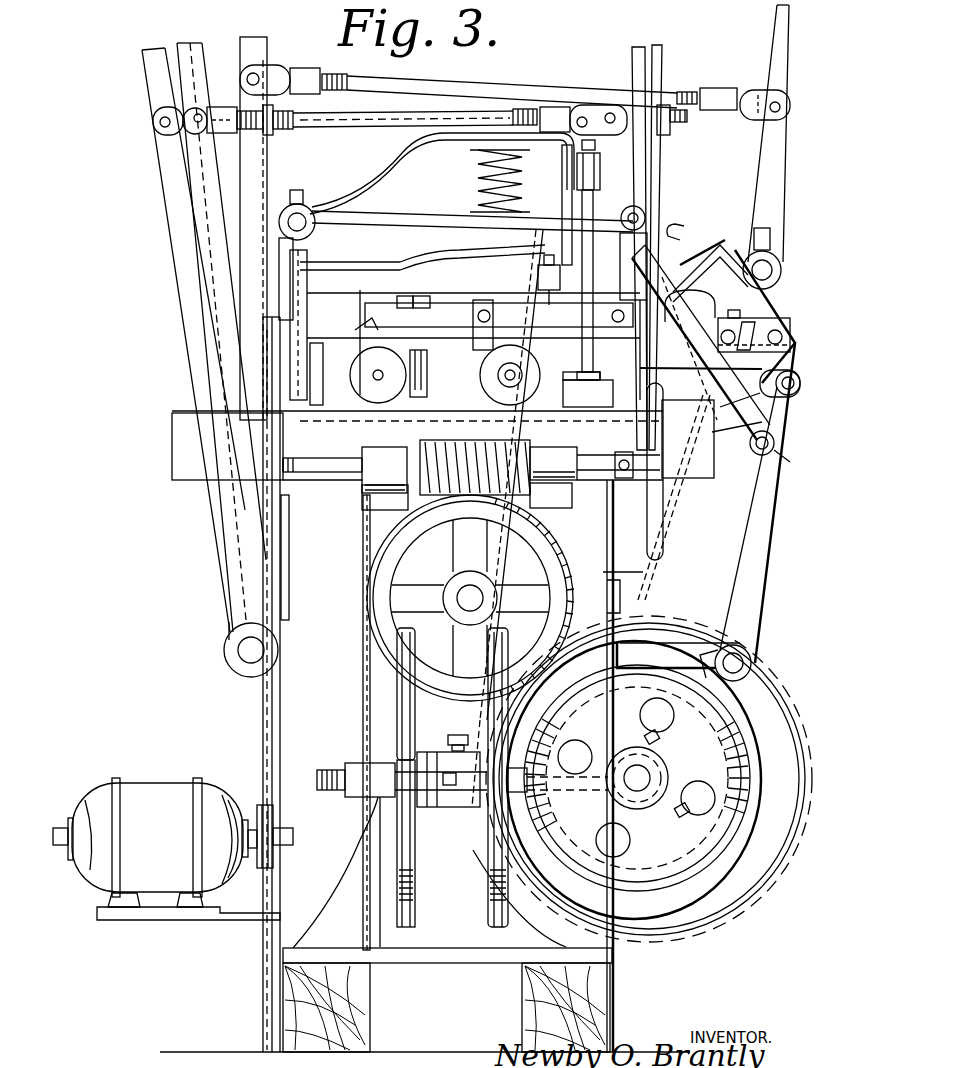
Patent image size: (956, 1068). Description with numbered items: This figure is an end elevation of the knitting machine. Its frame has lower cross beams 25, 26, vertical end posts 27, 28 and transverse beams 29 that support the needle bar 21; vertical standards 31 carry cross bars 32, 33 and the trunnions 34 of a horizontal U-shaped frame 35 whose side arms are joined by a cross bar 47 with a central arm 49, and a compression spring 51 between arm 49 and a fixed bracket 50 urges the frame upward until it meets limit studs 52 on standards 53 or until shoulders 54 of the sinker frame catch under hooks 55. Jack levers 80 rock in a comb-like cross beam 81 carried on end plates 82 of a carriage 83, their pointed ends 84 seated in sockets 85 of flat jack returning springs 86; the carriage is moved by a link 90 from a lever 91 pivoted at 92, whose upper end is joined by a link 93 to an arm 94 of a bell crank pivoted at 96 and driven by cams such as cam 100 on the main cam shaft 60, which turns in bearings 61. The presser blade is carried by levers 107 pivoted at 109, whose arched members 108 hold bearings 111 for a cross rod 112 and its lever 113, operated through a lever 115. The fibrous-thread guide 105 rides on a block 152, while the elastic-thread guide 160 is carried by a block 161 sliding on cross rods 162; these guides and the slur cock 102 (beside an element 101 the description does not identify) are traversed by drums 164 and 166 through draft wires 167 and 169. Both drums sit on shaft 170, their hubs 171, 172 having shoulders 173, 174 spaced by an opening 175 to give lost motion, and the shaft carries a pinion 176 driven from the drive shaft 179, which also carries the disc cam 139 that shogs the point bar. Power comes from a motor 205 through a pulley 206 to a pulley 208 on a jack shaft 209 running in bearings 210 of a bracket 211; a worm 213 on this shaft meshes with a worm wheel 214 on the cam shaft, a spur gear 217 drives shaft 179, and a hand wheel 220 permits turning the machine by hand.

The lever 115 is at (245, 50).
The link 93 is at (370, 110).
The shoulder 174 is at (545, 94).
The lever 113 is at (777, 52).
The arm of bell crank lever 94 is at (200, 185).
The trunnions 34 is at (305, 204).
The arm 49 is at (410, 168).
The compression spring 51 is at (488, 172).
The limit studs 52 is at (596, 148).
The cross bar 47 is at (600, 185).
The lever 91 is at (650, 165).
The horizontal U shaped frame 35 is at (398, 222).
The vertical standards 53 is at (593, 205).
The pivot 92 is at (645, 215).
The cross rod 112 is at (738, 240).
The thread guide 105 is at (695, 232).
The bearings 111 is at (790, 260).
The cross bar 33 is at (300, 252).
The fixed bracket 50 is at (408, 256).
The block 152 is at (538, 272).
The arched members 108 is at (772, 283).
The vertical standards 31 is at (307, 292).
The sockets 85 is at (360, 310).
The pointed ends 84 is at (366, 324).
The block 101 is at (407, 292).
The slur cock 102 is at (432, 292).
The jack levers 80 is at (445, 322).
The link 90 is at (505, 312).
The block 161 is at (722, 320).
The cross rods 162 is at (720, 337).
The cross bar 32 is at (322, 346).
The jack returning springs 86 is at (360, 355).
The end plates 82 is at (432, 368).
The cross beam 81 is at (526, 356).
The carriage 83 is at (530, 375).
The thread guide 160 is at (690, 355).
The needle bar 21 is at (567, 395).
The bearings 210 is at (378, 456).
The worm 213 is at (460, 445).
The hooks 55 is at (610, 440).
The shoulders 54 is at (622, 452).
The levers 107 is at (758, 438).
The cam 100 is at (757, 453).
The pivot 109 is at (800, 462).
The jack shaft 209 is at (325, 474).
The bracket 211 is at (365, 508).
The transverse beams 29 is at (705, 480).
The pulley or sprocket 208 is at (288, 547).
The draft wire 167 is at (513, 547).
The hand wheel 220 is at (663, 540).
The draft wire 169 is at (390, 575).
The bearings 61 is at (460, 590).
The main cam shaft 60 is at (462, 604).
The worm wheel 214 is at (570, 598).
The vertical end post 28 is at (643, 576).
The pivot 96 is at (240, 655).
The drum 166 is at (398, 655).
The second spur gear 217 is at (752, 665).
The shoulder 173 is at (450, 748).
The drum 164 is at (530, 688).
The vertical end post 27 is at (280, 730).
The shaft 170 is at (320, 790).
The pinion gear 176 is at (545, 805).
The drive shaft 179 is at (637, 790).
The opening 175 is at (445, 778).
The hub 172 is at (420, 830).
The hub 171 is at (486, 812).
The pulley or sprocket 206 is at (95, 882).
The motor 205 is at (258, 868).
The lateral thrust disc cam 139 is at (770, 885).
The lower cross beam 25 is at (365, 1008).
The lower cross beam 26 is at (522, 1002).